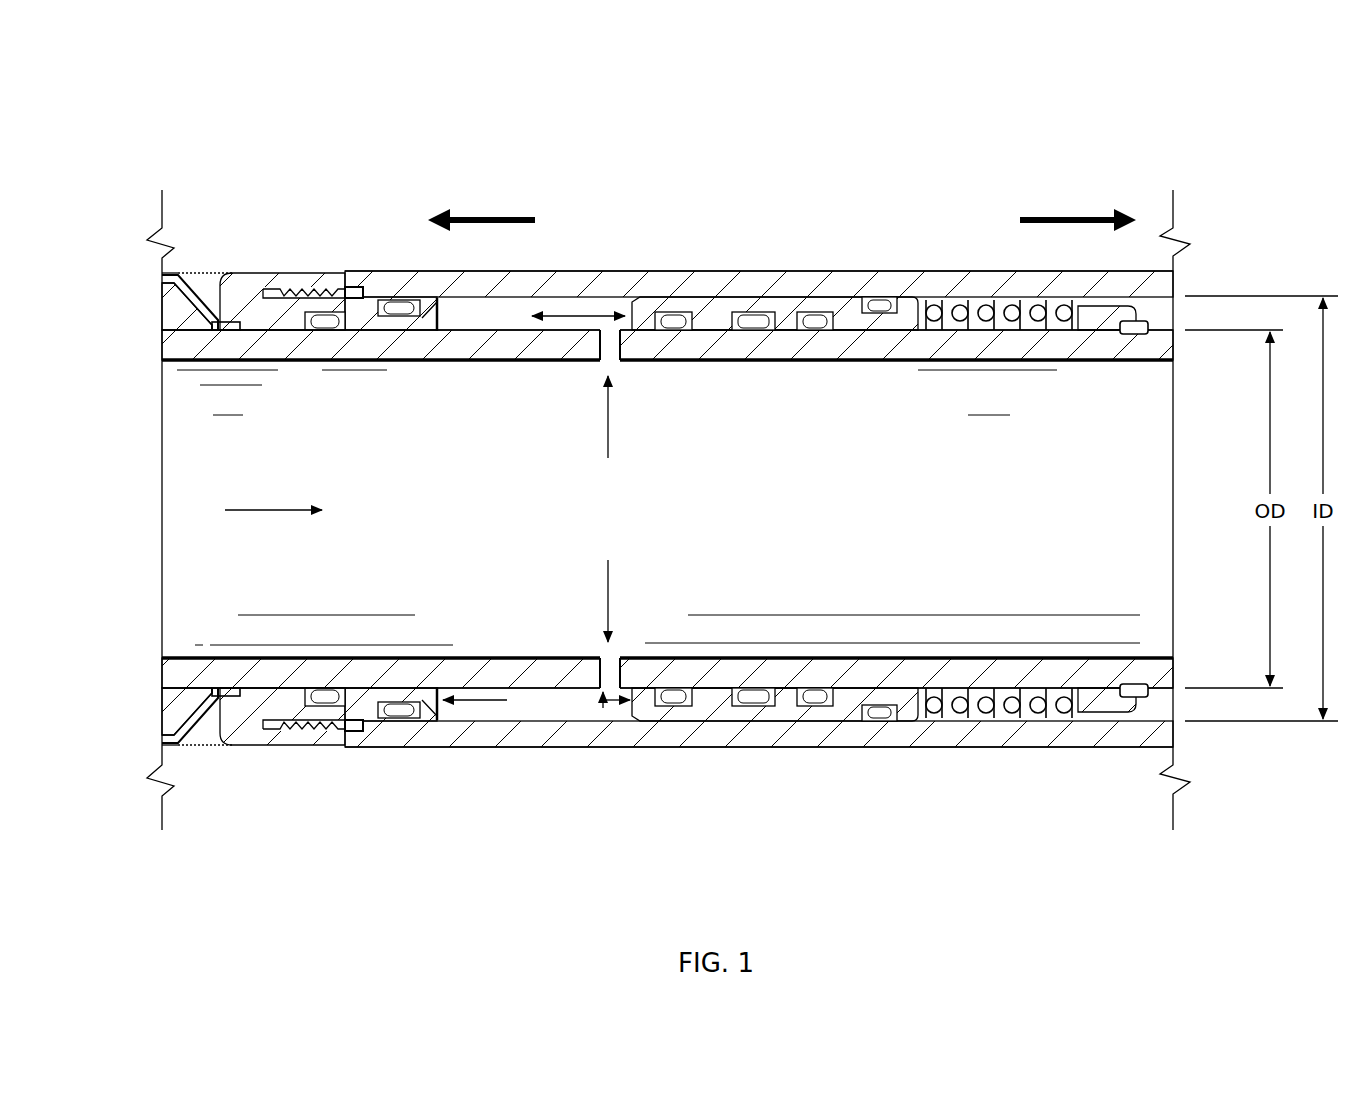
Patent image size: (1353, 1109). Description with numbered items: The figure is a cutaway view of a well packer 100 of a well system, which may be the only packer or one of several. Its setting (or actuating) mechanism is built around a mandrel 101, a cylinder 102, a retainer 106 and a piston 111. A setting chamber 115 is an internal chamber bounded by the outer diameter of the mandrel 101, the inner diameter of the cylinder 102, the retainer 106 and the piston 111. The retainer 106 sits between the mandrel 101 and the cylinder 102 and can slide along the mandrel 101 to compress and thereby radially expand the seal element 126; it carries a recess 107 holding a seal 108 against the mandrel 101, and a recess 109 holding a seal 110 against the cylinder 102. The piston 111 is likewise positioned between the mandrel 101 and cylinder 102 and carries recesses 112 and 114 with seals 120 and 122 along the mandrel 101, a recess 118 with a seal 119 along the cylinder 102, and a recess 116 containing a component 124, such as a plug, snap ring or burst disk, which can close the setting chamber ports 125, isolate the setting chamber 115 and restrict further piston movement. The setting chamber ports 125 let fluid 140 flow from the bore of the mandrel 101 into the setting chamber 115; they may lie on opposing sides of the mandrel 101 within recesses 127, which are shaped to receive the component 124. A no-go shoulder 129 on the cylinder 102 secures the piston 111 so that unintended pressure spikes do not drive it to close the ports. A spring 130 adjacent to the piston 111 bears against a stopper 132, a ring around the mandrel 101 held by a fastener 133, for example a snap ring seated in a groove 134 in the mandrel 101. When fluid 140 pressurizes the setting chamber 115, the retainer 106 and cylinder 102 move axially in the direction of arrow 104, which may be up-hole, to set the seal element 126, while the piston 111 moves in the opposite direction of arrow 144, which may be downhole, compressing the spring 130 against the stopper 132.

The well packer 100 is at (146, 95).
The mandrel 101 is at (684, 523).
The cylinder 102 is at (603, 296).
The directional arrow 104 is at (492, 216).
The retainer 106 is at (243, 290).
The recess 107 is at (328, 292).
The seal 108 is at (320, 331).
The recess 109 is at (402, 282).
The seal 110 is at (397, 316).
The piston 111 is at (877, 323).
The recess 112 is at (680, 298).
The recess 114 is at (815, 298).
The setting chamber 115 is at (493, 306).
The recess 116 is at (755, 298).
The recess 118 is at (871, 286).
The seal 119 is at (888, 296).
The seal 120 is at (668, 330).
The seal 122 is at (815, 330).
The component 124 is at (760, 330).
The setting chamber port 125 is at (598, 368).
The seal element 126 is at (163, 310).
The recess 127 is at (601, 712).
The no-go shoulder 129 is at (637, 726).
The spring 130 is at (995, 312).
The stopper 132 is at (1094, 333).
The fastener 133 is at (1142, 700).
The groove 134 is at (1119, 342).
The fluid 140 is at (270, 507).
The directional arrow 144 is at (1070, 216).